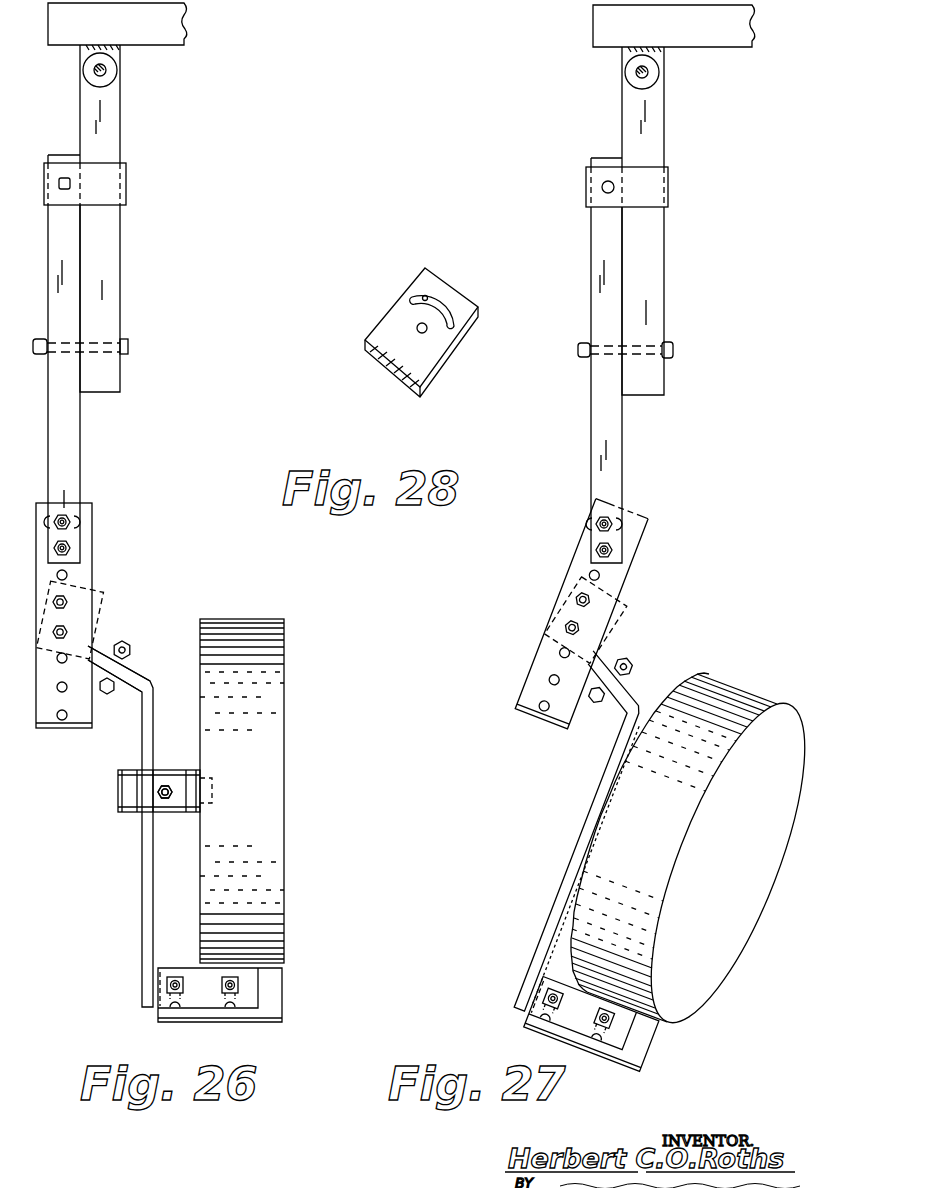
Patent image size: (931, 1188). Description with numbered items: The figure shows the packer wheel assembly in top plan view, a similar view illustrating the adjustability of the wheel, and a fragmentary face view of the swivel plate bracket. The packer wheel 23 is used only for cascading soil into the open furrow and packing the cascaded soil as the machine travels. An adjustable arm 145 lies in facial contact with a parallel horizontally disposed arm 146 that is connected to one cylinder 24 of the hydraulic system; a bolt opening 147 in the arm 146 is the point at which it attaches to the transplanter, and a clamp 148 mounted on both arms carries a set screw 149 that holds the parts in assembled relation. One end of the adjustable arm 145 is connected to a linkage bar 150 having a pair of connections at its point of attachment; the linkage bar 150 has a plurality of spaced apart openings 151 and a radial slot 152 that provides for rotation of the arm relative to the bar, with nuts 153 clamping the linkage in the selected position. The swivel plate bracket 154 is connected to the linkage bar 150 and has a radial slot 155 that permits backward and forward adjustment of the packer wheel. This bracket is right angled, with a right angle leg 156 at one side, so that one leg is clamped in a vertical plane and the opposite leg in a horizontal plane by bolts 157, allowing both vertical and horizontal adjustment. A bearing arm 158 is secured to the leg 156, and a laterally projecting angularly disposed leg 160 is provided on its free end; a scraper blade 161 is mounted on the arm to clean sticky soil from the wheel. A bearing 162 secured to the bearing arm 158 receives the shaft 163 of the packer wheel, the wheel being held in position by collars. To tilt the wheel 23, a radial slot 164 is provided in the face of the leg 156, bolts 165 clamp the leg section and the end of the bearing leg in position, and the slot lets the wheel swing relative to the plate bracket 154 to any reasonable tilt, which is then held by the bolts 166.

In FIG. 26, the packer wheel 23 is at (258, 793).
In FIG. 27, the packer wheel 23 is at (668, 834).
In FIG. 26, the cylinder 24 is at (117, 80).
In FIG. 27, the cylinder 24 is at (628, 80).
In FIG. 26, the adjustable arm 145 is at (82, 430).
In FIG. 27, the adjustable arm 145 is at (602, 295).
In FIG. 26, the arm 146 is at (122, 270).
In FIG. 27, the arm 146 is at (666, 278).
In FIG. 26, the bolt opening 147 is at (98, 330).
In FIG. 27, the bolt opening 147 is at (601, 357).
In FIG. 26, the clamp 148 is at (130, 203).
In FIG. 27, the clamp 148 is at (668, 193).
In FIG. 26, the set screw 149 is at (72, 184).
In FIG. 27, the set screw 149 is at (604, 190).
In FIG. 26, the linkage bar 150 is at (92, 572).
In FIG. 27, the linkage bar 150 is at (630, 588).
In FIG. 26, the spaced apart openings 151 is at (61, 692).
In FIG. 27, the spaced apart openings 151 is at (548, 710).
In FIG. 26, the radial slot 152 is at (85, 517).
In FIG. 27, the radial slot 152 is at (635, 521).
In FIG. 26, the nuts 153 is at (72, 548).
In FIG. 27, the nuts 153 is at (620, 553).
In FIG. 26, the swivel plate bracket 154 is at (100, 607).
In FIG. 27, the swivel plate bracket 154 is at (626, 632).
In FIG. 26, the radial slot 155 is at (96, 586).
In FIG. 27, the radial slot 155 is at (610, 606).
In FIG. 26, the right angle leg 156 is at (142, 676).
In FIG. 26, the bolts 157 is at (130, 643).
In FIG. 27, the bolts 157 is at (622, 657).
In FIG. 26, the bearing arm 158 is at (140, 832).
In FIG. 27, the bearing arm 158 is at (578, 822).
In FIG. 26, the laterally projecting angularly disposed leg 160 is at (167, 993).
In FIG. 27, the laterally projecting angularly disposed leg 160 is at (568, 1012).
In FIG. 26, the scraper blade 161 is at (280, 996).
In FIG. 27, the scraper blade 161 is at (650, 1052).
In FIG. 26, the bearing 162 is at (167, 814).
In FIG. 26, the shaft 163 is at (118, 790).
In FIG. 28, the radial slot 164 is at (448, 312).
In FIG. 28, the bolts 165 is at (374, 318).
In FIG. 28, the bolts 166 is at (425, 295).